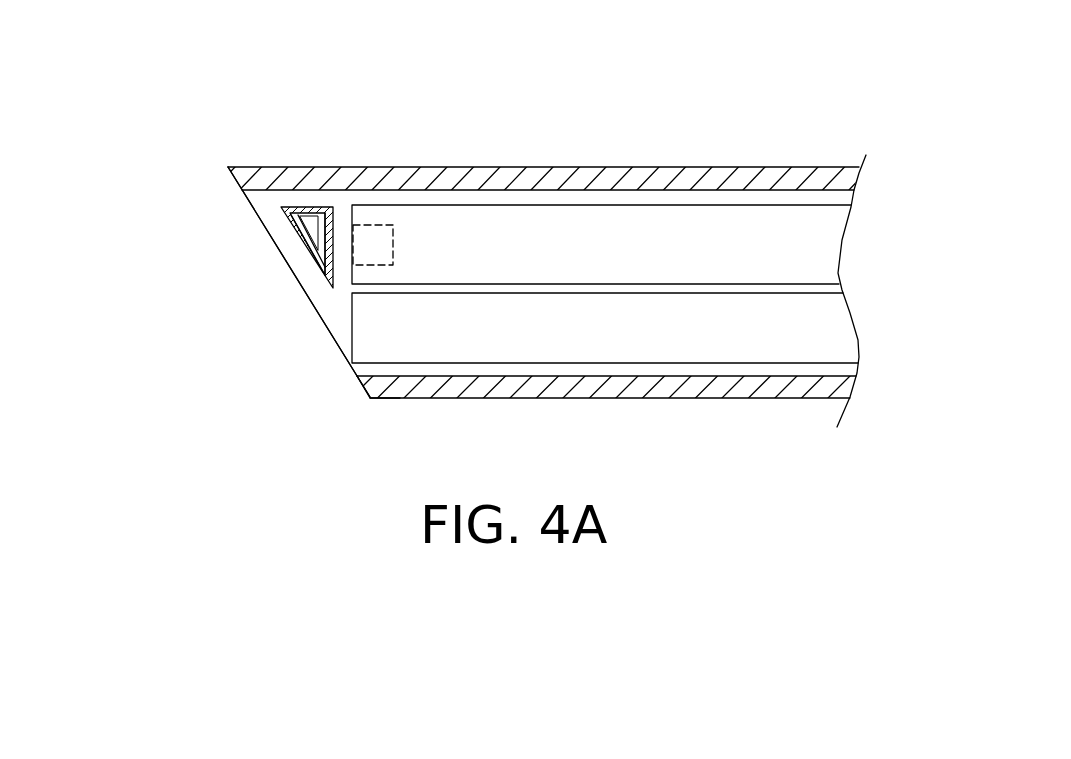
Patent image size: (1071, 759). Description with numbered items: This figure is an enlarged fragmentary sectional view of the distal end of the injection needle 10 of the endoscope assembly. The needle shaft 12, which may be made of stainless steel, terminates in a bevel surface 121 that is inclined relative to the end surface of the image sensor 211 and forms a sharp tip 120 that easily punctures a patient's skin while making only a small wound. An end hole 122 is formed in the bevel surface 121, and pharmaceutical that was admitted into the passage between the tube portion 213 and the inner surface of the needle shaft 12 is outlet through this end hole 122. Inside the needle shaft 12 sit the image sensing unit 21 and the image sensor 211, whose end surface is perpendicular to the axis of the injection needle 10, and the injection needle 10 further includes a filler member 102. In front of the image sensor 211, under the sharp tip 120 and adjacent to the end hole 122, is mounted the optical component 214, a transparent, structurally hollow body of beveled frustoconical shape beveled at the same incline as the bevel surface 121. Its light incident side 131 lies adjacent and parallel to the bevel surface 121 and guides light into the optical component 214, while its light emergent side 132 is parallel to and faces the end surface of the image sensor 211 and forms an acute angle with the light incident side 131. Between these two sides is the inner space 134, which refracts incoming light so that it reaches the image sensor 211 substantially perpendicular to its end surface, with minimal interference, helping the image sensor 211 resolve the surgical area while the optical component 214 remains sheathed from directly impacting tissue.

The injection needle 10 is at (842, 148).
The needle shaft 12 is at (803, 167).
The image sensing unit 21 is at (589, 188).
The tube portion 213 is at (675, 225).
The image sensor 211 is at (384, 237).
The filler member 102 is at (430, 340).
The sharp tip 120 is at (228, 167).
The end hole 122 is at (318, 315).
The bevel surface 121 is at (370, 396).
The optical component 214 is at (280, 212).
The light incident side 131 is at (306, 248).
The light emergent side 132 is at (335, 240).
The inner space 134 is at (312, 235).